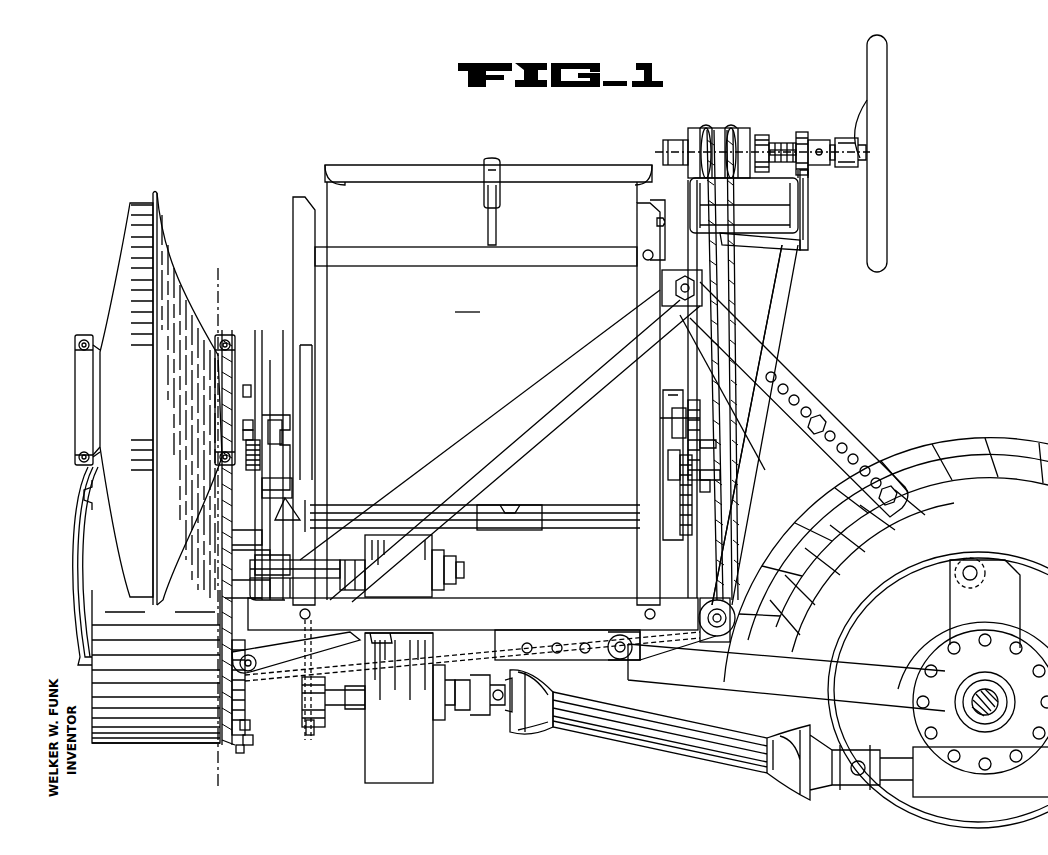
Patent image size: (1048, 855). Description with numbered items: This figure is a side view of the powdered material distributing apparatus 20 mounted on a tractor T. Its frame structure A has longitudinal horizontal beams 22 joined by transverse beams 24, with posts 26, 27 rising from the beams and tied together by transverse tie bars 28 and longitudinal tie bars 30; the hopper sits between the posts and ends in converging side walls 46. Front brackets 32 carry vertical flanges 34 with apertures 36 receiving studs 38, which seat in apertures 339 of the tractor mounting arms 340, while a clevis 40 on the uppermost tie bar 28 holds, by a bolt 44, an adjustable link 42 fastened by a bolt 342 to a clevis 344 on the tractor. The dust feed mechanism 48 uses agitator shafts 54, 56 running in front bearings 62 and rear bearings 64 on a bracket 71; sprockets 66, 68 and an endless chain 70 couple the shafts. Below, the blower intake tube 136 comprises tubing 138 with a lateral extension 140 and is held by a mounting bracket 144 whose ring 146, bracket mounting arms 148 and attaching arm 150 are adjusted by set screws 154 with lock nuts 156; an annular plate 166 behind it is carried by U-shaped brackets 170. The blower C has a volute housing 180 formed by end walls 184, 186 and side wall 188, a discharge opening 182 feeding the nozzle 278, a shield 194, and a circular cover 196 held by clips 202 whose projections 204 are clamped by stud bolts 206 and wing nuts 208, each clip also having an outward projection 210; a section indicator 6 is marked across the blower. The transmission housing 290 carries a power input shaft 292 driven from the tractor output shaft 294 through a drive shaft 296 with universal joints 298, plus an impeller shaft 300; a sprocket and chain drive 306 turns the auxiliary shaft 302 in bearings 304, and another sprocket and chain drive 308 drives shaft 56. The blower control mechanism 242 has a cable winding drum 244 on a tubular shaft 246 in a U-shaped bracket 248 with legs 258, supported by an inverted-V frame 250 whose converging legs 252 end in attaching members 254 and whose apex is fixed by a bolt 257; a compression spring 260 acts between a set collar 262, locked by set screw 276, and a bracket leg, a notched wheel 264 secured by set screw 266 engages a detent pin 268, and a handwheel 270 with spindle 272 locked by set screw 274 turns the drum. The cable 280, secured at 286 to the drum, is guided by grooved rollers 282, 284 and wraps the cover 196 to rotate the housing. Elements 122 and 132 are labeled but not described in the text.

The powdered material distributing apparatus 20 is at (276, 122).
The frame structure A is at (284, 235).
The section line 6 is at (262, 283).
The nozzle 278 is at (124, 247).
The discharge opening 182 is at (142, 355).
The removable shield 194 is at (90, 497).
The blower C is at (98, 562).
The rear end wall 186 is at (92, 614).
The volute-shaped housing 180 is at (158, 742).
The side wall 188 is at (182, 745).
The transverse tie bars 28 is at (330, 240).
The longitudinal tie bars 30 is at (392, 256).
The converging side walls 46 is at (485, 352).
The latch 132 is at (648, 222).
The bracket legs 258 is at (650, 198).
The clevis 40 is at (662, 290).
The bolt 44 is at (662, 302).
The post 26 is at (308, 388).
The dust feed mechanism 48 is at (292, 425).
The rear bearings 64 is at (298, 432).
The bracket 71 is at (305, 420).
The agitator support shaft 54 is at (300, 428).
The lower agitator shaft 56 is at (298, 470).
The bearings 304 is at (300, 500).
The auxiliary shaft 302 is at (495, 503).
The U-shaped brackets 170 is at (296, 512).
The lateral tubular extension 140 is at (262, 542).
The lock nuts 156 is at (302, 566).
The blower intake tube 136 is at (290, 578).
The impeller shaft 300 is at (462, 568).
The horizontal beams 22 is at (465, 598).
The intake tube attaching arm 150 is at (290, 600).
The annular ring 146 is at (272, 600).
The rear grooved rollers 284 is at (290, 640).
The transverse beams 24 is at (436, 636).
The brackets 32 is at (488, 645).
The vertical flange 34 is at (550, 640).
The studs 38 is at (622, 638).
The apertures 36 is at (588, 654).
The apertures 339 is at (635, 655).
The mounting arms 340 is at (628, 668).
The front grooved rollers 282 is at (700, 618).
The attaching members 254 is at (712, 598).
The sprocket and chain drive 308 is at (690, 538).
The plate 122 is at (690, 370).
The sprocket 66 is at (680, 415).
The post 27 is at (645, 423).
The front bearings 62 is at (670, 470).
The endless chain 70 is at (705, 445).
The sprocket 68 is at (706, 476).
The cable securing point 286 is at (700, 150).
The tubular shaft 246 is at (670, 148).
The cable winding drum 244 is at (718, 128).
The set collar 262 is at (760, 128).
The set screw 276 is at (762, 135).
The compression spring 260 is at (780, 143).
The set screw 266 is at (812, 124).
The set screw 274 is at (820, 165).
The spindle 272 is at (840, 152).
The handwheel 270 is at (866, 168).
The notched wheel 264 is at (790, 162).
The detent pin 268 is at (800, 192).
The bolt 257 is at (805, 230).
The blower control mechanism 242 is at (890, 73).
The cable 280 is at (688, 135).
The U-shaped bracket 248 is at (760, 240).
The inverted V-shaped frame 250 is at (790, 290).
The converging legs 252 is at (785, 300).
The longitudinally adjustable link 42 is at (798, 384).
The tractor T is at (1040, 472).
The clevis 344 is at (1000, 612).
The bolt 342 is at (972, 564).
The power output shaft 294 is at (900, 770).
The universal joints 298 is at (492, 718).
The drive shaft 296 is at (662, 750).
The transmission housing 290 is at (416, 766).
The power input shaft 292 is at (450, 712).
The circular cover 196 is at (240, 695).
The cover attaching clips 202 is at (242, 408).
The wing nut 208 is at (245, 412).
The stud bolt 206 is at (247, 428).
The projection 204 is at (247, 440).
The second projection 210 is at (245, 746).
The front end wall 184 is at (232, 740).
The sprocket and chain drive 306 is at (325, 730).
The annular plate 166 is at (280, 530).
The set screws 154 is at (290, 548).
The bracket mounting arms 148 is at (270, 565).
The mounting bracket 144 is at (280, 576).
The large diameter tubing 138 is at (270, 596).